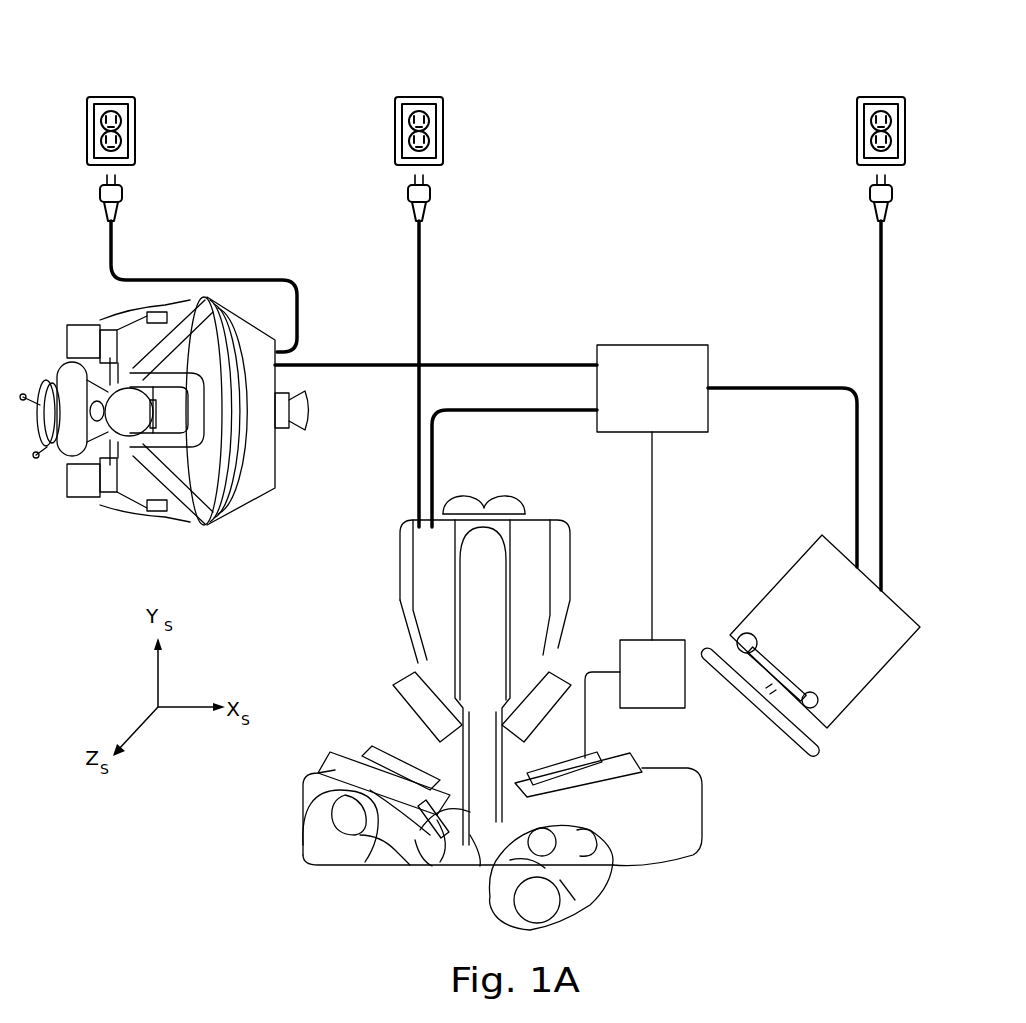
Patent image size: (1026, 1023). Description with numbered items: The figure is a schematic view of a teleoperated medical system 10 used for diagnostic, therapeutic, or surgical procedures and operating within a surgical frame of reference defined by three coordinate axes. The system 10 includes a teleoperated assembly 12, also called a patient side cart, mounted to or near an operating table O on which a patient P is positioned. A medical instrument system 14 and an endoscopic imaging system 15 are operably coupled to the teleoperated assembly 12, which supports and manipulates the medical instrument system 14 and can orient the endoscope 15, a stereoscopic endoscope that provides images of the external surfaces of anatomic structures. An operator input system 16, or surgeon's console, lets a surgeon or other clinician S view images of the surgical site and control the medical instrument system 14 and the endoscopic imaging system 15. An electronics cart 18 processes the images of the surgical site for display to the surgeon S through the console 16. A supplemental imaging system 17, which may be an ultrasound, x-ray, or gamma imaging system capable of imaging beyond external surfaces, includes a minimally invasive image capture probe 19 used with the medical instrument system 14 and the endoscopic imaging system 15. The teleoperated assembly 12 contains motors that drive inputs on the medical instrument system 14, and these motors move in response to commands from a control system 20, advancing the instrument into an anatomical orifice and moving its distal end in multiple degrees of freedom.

The teleoperated medical system 10 is at (655, 78).
The teleoperated assembly 12 is at (398, 568).
The medical instrument system 14 is at (418, 830).
The endoscopic imaging system 15 is at (443, 857).
The operator input system 16 is at (250, 505).
The supplemental imaging system 17 is at (638, 689).
The electronics cart 18 is at (873, 685).
The minimally invasive image capture probe 19 is at (603, 792).
The control system 20 is at (638, 404).
The surgeon S is at (60, 380).
The patient P is at (328, 848).
The operating table O is at (642, 870).